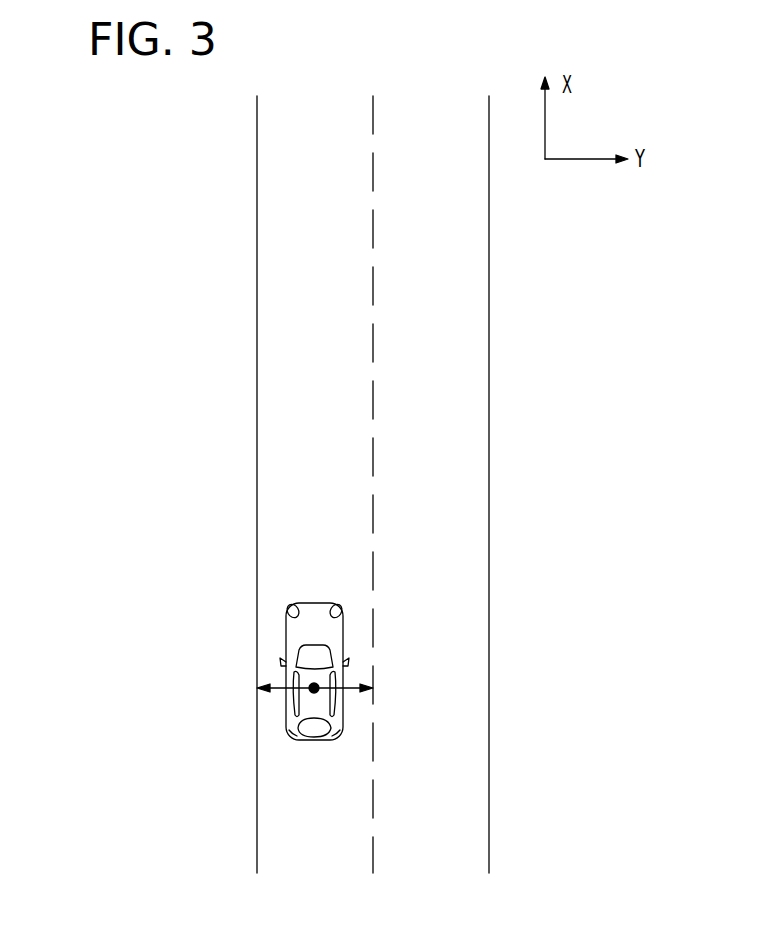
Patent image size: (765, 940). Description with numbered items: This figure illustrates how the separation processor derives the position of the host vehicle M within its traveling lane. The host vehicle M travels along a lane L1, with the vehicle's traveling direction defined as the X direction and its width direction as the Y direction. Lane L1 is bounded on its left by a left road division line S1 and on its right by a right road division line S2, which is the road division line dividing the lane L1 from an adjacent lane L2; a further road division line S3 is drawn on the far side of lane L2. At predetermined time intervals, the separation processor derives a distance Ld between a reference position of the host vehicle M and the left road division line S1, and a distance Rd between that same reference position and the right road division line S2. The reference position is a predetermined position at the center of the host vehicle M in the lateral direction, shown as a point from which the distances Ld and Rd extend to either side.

The left road division line S1 is at (257, 232).
The right road division line S2 is at (373, 231).
The right lane boundary line S3 is at (489, 232).
The host vehicle M is at (286, 627).
The distance Ld is at (282, 690).
The distance Rd is at (345, 690).
The lane L1 is at (332, 890).
The lane L2 is at (448, 890).